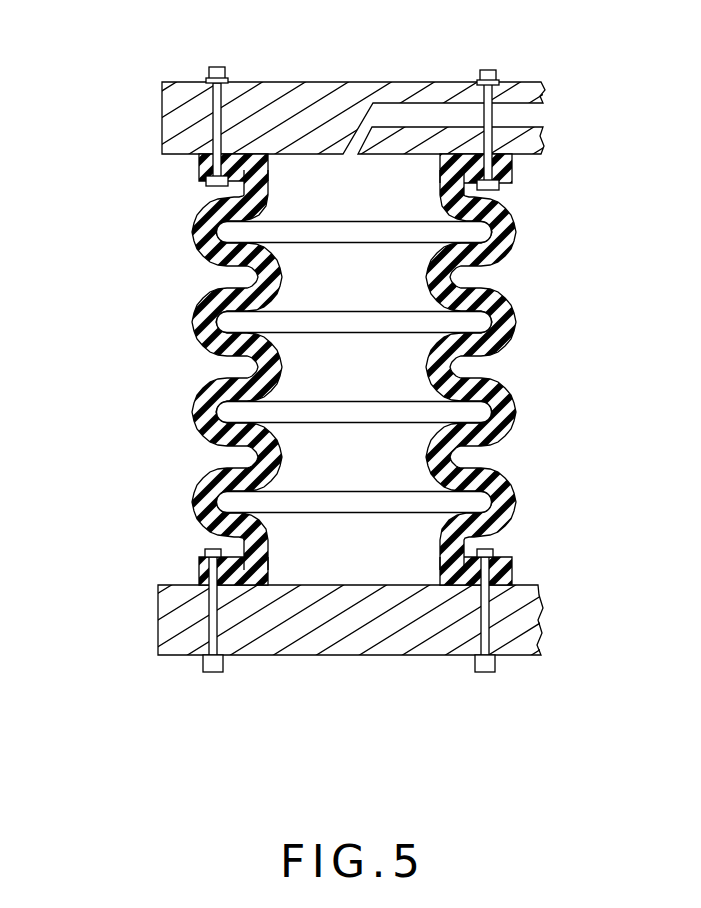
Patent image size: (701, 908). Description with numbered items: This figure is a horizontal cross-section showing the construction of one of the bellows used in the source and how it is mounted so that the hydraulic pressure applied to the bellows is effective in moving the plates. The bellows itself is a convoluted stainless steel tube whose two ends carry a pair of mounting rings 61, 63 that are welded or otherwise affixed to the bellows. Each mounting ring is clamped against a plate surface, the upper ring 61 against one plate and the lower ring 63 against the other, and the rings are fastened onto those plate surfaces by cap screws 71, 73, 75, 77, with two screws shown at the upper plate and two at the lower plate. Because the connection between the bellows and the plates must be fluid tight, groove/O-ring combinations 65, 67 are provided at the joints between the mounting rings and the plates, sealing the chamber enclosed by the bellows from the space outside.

The mounting ring 61 is at (513, 170).
The mounting ring 63 is at (507, 572).
The groove/O-ring combination 65 is at (247, 157).
The groove/O-ring combination 67 is at (245, 585).
The cap screw 71 is at (496, 100).
The cap screw 73 is at (213, 104).
The cap screw 75 is at (483, 622).
The cap screw 77 is at (159, 655).